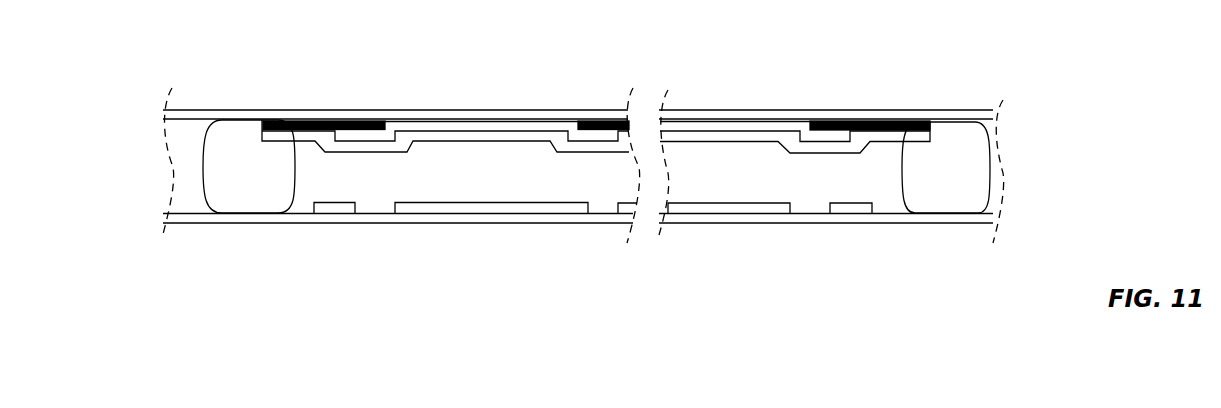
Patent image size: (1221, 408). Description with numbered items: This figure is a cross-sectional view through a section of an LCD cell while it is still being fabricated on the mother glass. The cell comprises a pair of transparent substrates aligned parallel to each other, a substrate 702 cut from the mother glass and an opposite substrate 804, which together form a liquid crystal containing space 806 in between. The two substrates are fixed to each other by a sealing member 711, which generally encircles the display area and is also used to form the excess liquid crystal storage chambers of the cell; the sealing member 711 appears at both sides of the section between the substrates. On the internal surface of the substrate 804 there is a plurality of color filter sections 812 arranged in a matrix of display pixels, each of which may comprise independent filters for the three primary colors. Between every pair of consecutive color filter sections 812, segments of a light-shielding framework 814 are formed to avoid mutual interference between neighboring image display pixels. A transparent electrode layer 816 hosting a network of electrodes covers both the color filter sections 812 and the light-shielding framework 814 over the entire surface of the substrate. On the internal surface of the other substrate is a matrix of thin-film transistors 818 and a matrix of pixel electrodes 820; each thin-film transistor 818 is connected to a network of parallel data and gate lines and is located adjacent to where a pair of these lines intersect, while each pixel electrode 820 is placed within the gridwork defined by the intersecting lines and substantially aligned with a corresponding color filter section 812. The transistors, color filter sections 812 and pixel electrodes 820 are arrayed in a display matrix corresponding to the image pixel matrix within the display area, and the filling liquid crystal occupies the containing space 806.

The substrate 702 is at (182, 224).
The sealing member 711 is at (223, 161).
The substrate 804 is at (203, 110).
The liquid crystal containing space 806 is at (517, 182).
The color filter section 812 is at (458, 113).
The light-shielding framework 814 is at (358, 127).
The transparent electrode layer 816 is at (596, 101).
The thin-film transistor 818 is at (335, 208).
The pixel electrode 820 is at (455, 208).